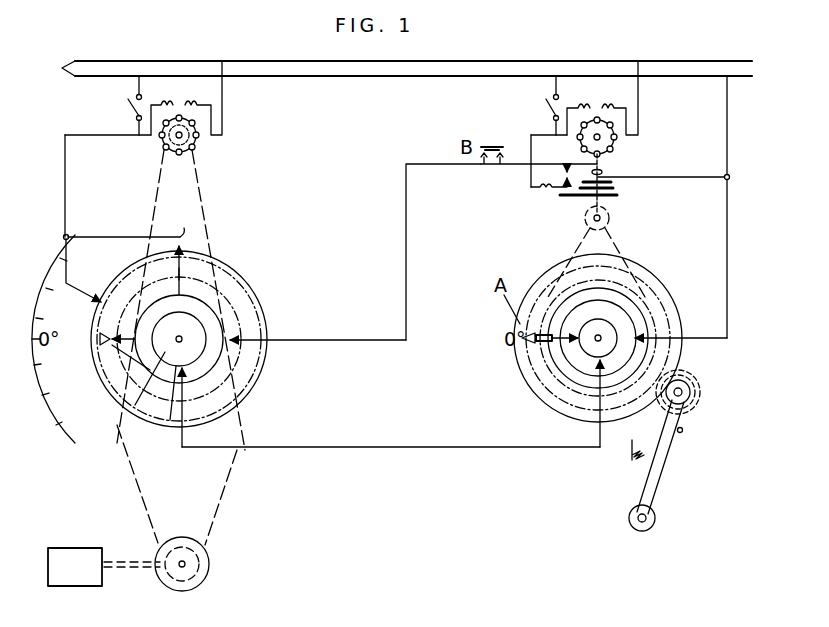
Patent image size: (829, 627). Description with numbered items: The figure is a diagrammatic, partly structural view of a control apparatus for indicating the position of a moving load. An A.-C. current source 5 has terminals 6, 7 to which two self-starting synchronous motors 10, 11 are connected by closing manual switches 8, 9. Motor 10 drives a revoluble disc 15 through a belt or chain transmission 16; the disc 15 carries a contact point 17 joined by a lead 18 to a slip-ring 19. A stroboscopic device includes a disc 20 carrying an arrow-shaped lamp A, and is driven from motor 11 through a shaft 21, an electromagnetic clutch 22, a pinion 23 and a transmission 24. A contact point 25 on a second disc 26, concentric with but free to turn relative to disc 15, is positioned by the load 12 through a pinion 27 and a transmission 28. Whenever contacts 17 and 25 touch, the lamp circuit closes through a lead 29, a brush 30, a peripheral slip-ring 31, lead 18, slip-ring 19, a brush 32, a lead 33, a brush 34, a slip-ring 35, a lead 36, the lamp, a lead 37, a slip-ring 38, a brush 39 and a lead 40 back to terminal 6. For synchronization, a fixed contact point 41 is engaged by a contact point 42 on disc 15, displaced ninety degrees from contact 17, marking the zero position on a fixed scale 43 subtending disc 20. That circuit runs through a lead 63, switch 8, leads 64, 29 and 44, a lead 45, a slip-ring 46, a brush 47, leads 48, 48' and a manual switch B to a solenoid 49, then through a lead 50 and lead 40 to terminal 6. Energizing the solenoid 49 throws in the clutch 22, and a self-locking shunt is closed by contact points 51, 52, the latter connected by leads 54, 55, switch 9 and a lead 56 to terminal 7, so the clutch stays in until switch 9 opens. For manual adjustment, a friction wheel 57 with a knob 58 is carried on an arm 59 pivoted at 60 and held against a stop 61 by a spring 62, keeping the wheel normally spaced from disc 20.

The A.-C. current source 5 is at (62, 68).
The terminal 6 is at (470, 61).
The terminal 7 is at (468, 77).
The manual switch 8 is at (126, 103).
The manual switch 9 is at (544, 104).
The self-starting synchronous motor 10 is at (198, 143).
The self-starting synchronous motor 11 is at (616, 130).
The load 12 is at (68, 546).
The revoluble disc 15 is at (228, 390).
The belt or chain transmission 16 is at (202, 183).
The contact point 17 is at (105, 390).
The lead 18 is at (112, 410).
The slip-ring 19 is at (156, 420).
The disc 20 is at (520, 322).
The shaft 21 is at (620, 196).
The electromagnetic clutch 22 is at (616, 189).
The pinion 23 is at (608, 218).
The belt or chain transmission 24 is at (576, 242).
The contact point 25 is at (100, 341).
The revoluble disc 26 is at (246, 284).
The pinion 27 is at (208, 558).
The belt or chain transmission 28 is at (230, 489).
The lead 29 is at (62, 235).
The brush 30 is at (96, 300).
The peripheral slip-ring 31 is at (240, 333).
The brush 32 is at (188, 368).
The lead 33 is at (350, 446).
The brush 34 is at (596, 365).
The slip-ring 35 is at (632, 348).
The lead 36 is at (575, 352).
The lead 37 is at (565, 346).
The slip-ring 38 is at (618, 360).
The brush 39 is at (645, 336).
The lead 40 is at (728, 280).
The fixed contact point 41 is at (187, 219).
The contact point 42 is at (185, 252).
The fixed scale 43 is at (658, 284).
The lead 44 is at (88, 236).
The lead 45 is at (190, 266).
The slip-ring 46 is at (252, 355).
The brush 47 is at (232, 330).
The lead 48 is at (405, 252).
The lead 48' is at (489, 171).
The solenoid 49 is at (603, 172).
The lead 50 is at (712, 176).
The contact point 51 is at (565, 172).
The contact point 52 is at (560, 190).
The lead 54 is at (530, 137).
The lead 55 is at (553, 125).
The lead 56 is at (560, 96).
The friction wheel 57 is at (700, 390).
The knob 58 is at (695, 400).
The arm 59 is at (672, 452).
The pivot 60 is at (655, 518).
The stop 61 is at (683, 430).
The spring 62 is at (632, 458).
The lead 63 is at (143, 96).
The lead 64 is at (136, 122).